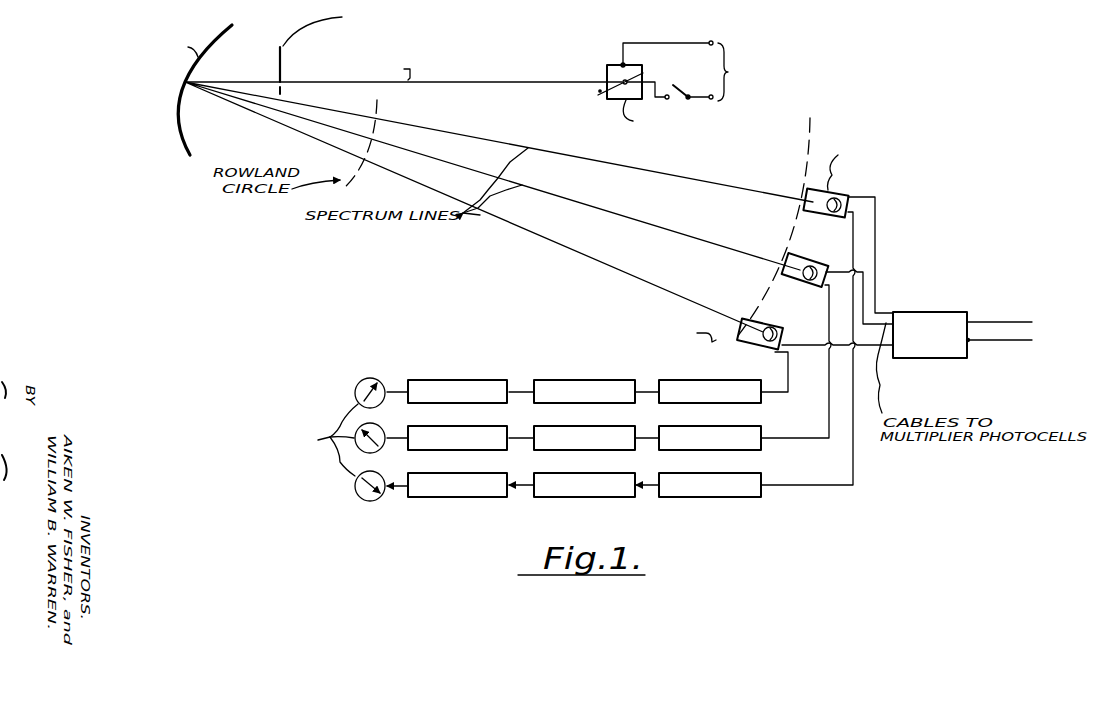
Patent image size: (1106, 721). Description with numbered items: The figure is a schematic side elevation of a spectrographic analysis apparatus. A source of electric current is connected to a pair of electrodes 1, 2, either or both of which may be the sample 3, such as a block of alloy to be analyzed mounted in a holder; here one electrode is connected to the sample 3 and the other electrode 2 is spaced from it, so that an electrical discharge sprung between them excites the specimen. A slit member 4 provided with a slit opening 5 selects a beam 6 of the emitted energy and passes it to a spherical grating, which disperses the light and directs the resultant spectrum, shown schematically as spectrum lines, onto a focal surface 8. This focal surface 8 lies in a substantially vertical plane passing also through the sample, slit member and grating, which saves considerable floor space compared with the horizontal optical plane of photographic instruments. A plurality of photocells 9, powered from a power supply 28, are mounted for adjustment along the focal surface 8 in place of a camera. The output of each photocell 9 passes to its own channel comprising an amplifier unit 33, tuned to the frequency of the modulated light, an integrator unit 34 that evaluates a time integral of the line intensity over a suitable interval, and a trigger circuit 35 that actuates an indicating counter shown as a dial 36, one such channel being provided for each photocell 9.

The electrode 1 is at (627, 62).
The electrode 2 is at (183, 126).
The sample 3 is at (645, 73).
The slit member 4 is at (284, 56).
The slit opening 5 is at (278, 80).
The beam 6 is at (444, 84).
The focal surface 8 is at (805, 164).
The photocells 9 is at (807, 253).
The multiplier power supply 28 is at (919, 311).
The amplifier unit 33 is at (712, 498).
The integrator unit 34 is at (592, 498).
The trigger circuit 35 is at (465, 498).
The dial 36 is at (360, 497).